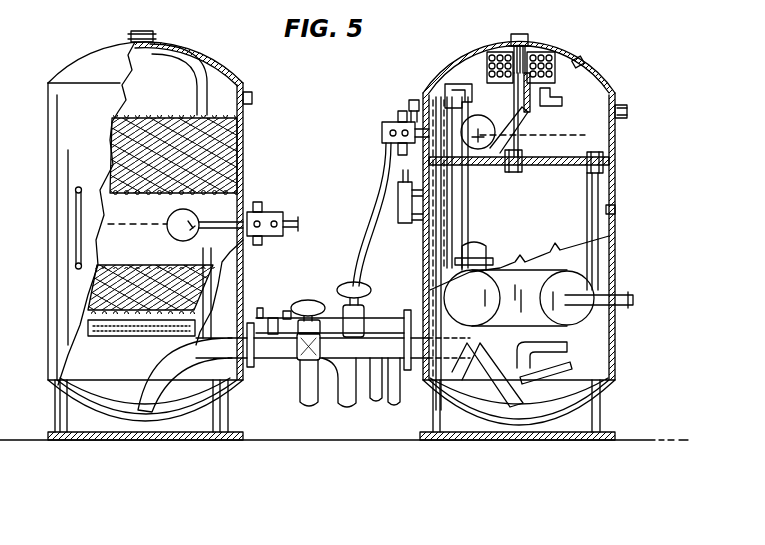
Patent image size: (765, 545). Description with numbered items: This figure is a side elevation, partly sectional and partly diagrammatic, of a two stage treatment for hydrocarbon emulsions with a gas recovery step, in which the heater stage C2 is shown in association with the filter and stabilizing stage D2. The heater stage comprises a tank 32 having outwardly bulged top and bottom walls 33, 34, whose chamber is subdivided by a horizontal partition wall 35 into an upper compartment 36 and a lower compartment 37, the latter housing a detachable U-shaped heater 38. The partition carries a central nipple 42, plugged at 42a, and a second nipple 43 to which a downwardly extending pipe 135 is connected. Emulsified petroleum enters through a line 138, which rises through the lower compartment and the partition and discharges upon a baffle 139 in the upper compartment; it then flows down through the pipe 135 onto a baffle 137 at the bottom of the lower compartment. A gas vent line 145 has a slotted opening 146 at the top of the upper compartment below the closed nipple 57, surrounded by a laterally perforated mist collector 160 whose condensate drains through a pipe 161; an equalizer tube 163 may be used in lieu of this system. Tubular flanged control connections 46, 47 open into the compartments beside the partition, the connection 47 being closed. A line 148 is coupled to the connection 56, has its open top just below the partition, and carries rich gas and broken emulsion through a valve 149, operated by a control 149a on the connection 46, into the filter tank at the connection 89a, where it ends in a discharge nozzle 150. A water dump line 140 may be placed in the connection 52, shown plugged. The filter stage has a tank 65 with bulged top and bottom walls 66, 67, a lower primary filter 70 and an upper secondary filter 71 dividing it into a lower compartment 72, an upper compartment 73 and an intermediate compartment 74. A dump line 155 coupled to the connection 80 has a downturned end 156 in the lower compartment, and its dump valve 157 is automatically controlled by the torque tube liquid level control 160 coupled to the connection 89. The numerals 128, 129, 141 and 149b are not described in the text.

The tank 65 is at (48, 172).
The top wall 66 is at (107, 62).
The bottom wall 67 is at (82, 415).
The lower primary filter 70 is at (90, 298).
The upper secondary filter 71 is at (112, 163).
The lower compartment 72 is at (145, 384).
The upper compartment 73 is at (155, 98).
The intermediate compartment 74 is at (175, 227).
The connection 80 is at (250, 367).
The connection 89 is at (258, 211).
The connection 89a is at (256, 318).
The nozzle 128 is at (216, 103).
The inlet tube 129 is at (176, 56).
The filter and stabilizing stage D2 is at (248, 108).
The discharge nozzle 150 is at (140, 338).
The dump line 155 is at (298, 354).
The downturned end 156 is at (178, 366).
The dump valve 157 is at (300, 380).
The line 148 is at (322, 322).
The valve 149 is at (368, 296).
The control 149a is at (382, 131).
The fitting 149b is at (496, 104).
The torque tube liquid level control 160 is at (268, 222).
The connection 56 is at (408, 310).
The connection 52 is at (430, 352).
The line 138 is at (396, 404).
The baffle 139 is at (484, 72).
The nipple 57 is at (512, 52).
The slotted opening 146 is at (542, 62).
The pipe 161 is at (562, 101).
The equalizer tube 163 is at (497, 137).
The control connection 46 is at (410, 118).
The control connection 47 is at (404, 223).
The plug 42a is at (522, 158).
The partition wall 35 is at (550, 157).
The nipple 42 is at (516, 172).
The nipple 43 is at (590, 152).
The heater stage C2 is at (618, 176).
The gas vent line 145 is at (466, 222).
The downwardly extending pipe 135 is at (587, 212).
The lower compartment 37 is at (616, 216).
The tank 32 is at (615, 236).
The top wall 33 is at (601, 76).
The bottom wall 34 is at (606, 428).
The upper compartment 36 is at (606, 91).
The tube 141 is at (480, 262).
The U-shaped heater 38 is at (540, 285).
The water dump line 140 is at (508, 392).
The baffle 137 is at (555, 363).